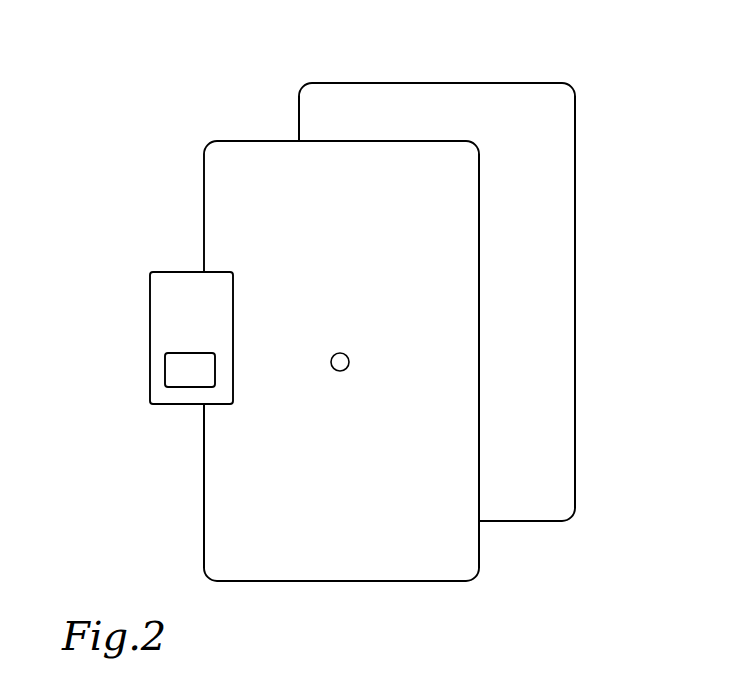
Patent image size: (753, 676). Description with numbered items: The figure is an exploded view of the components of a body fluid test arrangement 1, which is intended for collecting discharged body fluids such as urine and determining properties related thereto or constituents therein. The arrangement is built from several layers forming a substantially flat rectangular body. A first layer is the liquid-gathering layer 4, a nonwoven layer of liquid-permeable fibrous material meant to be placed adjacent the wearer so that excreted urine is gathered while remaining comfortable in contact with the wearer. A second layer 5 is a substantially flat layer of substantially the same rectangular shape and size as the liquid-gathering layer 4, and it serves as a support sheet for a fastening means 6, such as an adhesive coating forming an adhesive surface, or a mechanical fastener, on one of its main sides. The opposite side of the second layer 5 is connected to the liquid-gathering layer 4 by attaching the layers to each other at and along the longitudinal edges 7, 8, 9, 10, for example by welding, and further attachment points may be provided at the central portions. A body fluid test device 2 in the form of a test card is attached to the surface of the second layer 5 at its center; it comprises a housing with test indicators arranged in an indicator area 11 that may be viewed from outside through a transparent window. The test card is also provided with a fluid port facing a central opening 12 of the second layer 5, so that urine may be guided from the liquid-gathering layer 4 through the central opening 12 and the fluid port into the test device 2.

The body fluid test arrangement 1 is at (637, 63).
The body fluid test device 2 is at (142, 297).
The liquid-gathering layer 4 is at (290, 77).
The second layer 5 is at (197, 222).
The fastening means 6 is at (360, 272).
The longitudinal edge 7 is at (204, 455).
The longitudinal edge 8 is at (299, 122).
The longitudinal edge 9 is at (479, 471).
The longitudinal edge 10 is at (575, 302).
The indicator area 11 is at (180, 367).
The central opening 12 is at (349, 366).